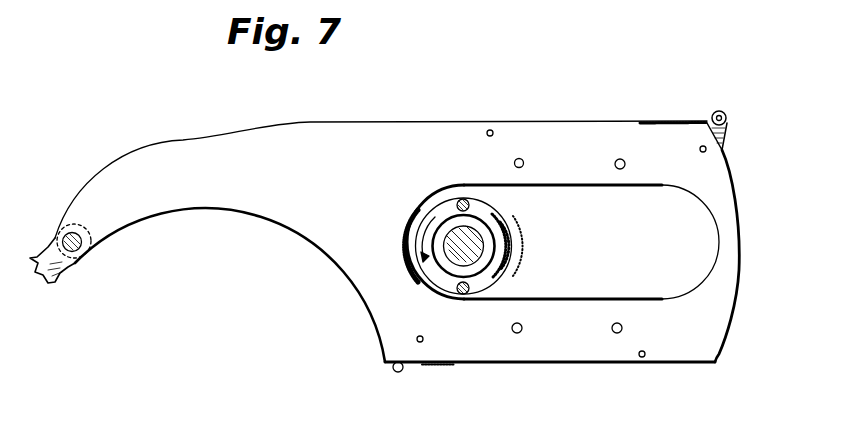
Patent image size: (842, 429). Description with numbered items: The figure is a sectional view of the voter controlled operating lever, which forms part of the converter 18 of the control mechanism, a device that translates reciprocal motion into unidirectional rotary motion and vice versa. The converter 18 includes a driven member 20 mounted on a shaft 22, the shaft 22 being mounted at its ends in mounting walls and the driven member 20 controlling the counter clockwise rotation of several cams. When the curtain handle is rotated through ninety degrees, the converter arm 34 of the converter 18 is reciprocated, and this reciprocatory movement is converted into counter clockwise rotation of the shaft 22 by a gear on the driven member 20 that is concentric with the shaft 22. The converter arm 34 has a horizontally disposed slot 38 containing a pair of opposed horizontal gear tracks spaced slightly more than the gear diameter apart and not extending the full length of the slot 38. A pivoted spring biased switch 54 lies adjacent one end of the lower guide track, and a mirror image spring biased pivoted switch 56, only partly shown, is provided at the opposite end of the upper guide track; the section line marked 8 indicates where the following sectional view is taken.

The converter 18 is at (361, 334).
The driven member 20 is at (531, 223).
The shaft 22 is at (452, 258).
The converter arm 34 is at (187, 148).
The slot 38 is at (706, 272).
The pivoted spring biased switch 54 is at (398, 373).
The spring biased pivoted switch 56 is at (727, 124).
The section line 8- 8 is at (568, 113).